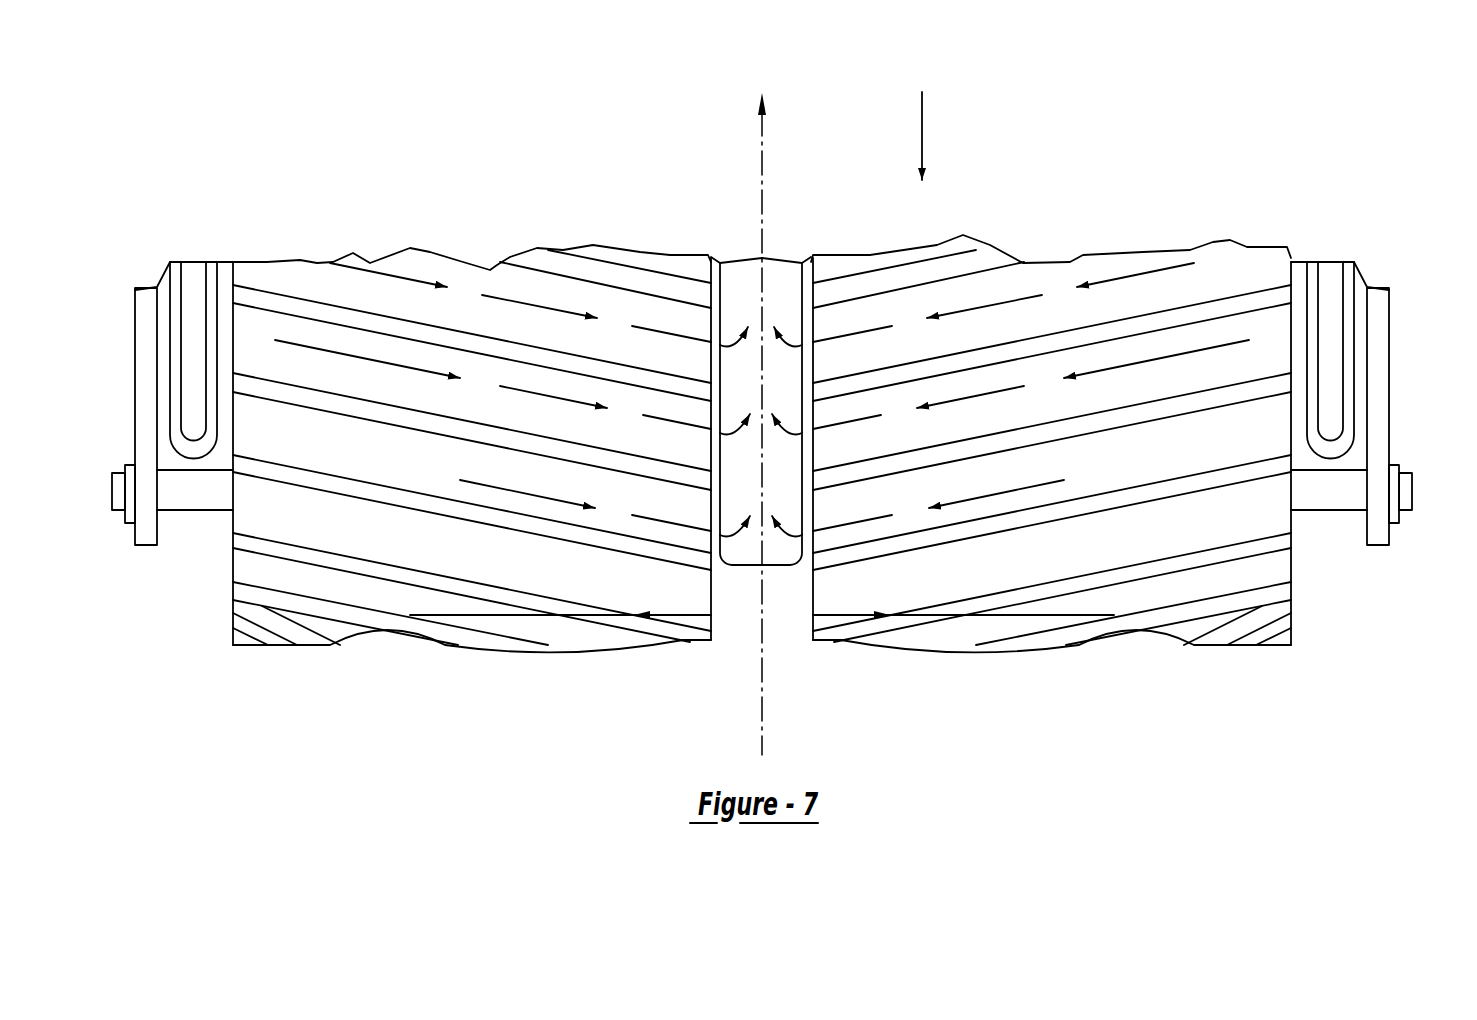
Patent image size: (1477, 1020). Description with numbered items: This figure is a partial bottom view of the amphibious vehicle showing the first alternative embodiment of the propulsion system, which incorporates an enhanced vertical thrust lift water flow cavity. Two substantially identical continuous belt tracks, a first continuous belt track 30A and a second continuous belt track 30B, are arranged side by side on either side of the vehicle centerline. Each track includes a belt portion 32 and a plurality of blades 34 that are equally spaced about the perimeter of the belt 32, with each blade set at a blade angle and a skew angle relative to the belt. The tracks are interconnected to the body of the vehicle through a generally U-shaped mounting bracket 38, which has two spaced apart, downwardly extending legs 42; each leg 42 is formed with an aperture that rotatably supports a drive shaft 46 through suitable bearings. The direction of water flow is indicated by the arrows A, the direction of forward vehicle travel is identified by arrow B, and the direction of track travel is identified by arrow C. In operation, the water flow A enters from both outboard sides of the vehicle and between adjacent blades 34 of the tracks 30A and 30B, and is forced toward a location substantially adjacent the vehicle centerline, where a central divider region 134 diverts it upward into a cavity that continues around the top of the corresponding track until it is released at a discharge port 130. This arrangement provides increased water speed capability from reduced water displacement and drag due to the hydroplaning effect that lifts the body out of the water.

The discharge port 130 is at (177, 284).
The center flange 134 is at (758, 678).
The blades 34 is at (567, 262).
The belt portion 32 is at (903, 592).
The first continuous belt track 30A is at (1282, 566).
The second continuous belt track 30B is at (248, 573).
The mounting bracket 38 is at (1395, 359).
The legs 42 is at (1397, 431).
The drive shaft 46 is at (1328, 520).
The water flow direction arrows A is at (995, 307).
The forward vehicle travel direction arrow B is at (922, 138).
The track travel direction arrow C is at (762, 153).